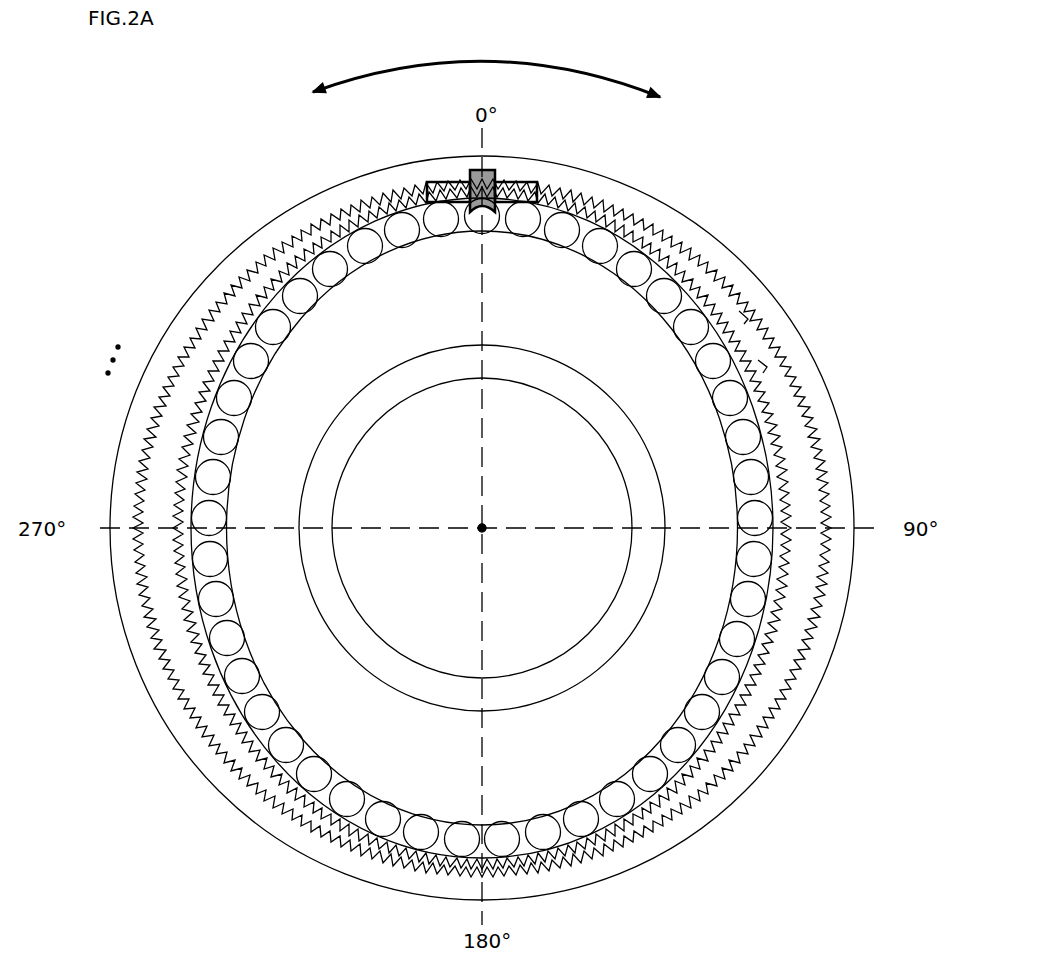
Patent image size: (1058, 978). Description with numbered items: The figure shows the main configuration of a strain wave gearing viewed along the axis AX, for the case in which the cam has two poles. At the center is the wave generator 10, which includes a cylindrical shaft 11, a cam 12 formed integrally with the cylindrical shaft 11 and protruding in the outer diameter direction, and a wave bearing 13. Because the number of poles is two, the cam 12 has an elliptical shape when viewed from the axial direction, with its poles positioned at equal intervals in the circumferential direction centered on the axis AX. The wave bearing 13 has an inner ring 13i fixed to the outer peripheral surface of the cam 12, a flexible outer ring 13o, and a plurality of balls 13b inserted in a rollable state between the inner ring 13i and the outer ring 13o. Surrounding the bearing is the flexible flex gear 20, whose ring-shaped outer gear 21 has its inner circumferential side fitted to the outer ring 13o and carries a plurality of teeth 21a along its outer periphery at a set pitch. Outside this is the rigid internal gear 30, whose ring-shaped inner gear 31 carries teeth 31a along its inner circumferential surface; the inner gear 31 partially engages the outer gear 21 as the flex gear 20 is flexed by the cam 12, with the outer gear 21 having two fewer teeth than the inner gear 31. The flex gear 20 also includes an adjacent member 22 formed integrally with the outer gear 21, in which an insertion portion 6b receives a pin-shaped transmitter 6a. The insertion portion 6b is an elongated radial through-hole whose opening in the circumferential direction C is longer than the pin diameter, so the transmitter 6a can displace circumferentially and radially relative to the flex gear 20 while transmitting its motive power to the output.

The circumferential direction C is at (495, 61).
The internal gear 30 is at (733, 249).
The inner gear 31 is at (768, 338).
The teeth 31a is at (745, 318).
The flex gear 20 is at (535, 492).
The outer gear 21 is at (767, 410).
The teeth 21a is at (766, 366).
The adjacent member 22 is at (520, 188).
The wave bearing 13 is at (439, 528).
The outer ring 13o is at (212, 643).
The inner ring 13i is at (215, 668).
The balls 13b is at (296, 300).
The wave generator 10 is at (482, 510).
The cylindrical shaft 11 is at (577, 413).
The cam 12 is at (560, 310).
The transmitter 6a is at (494, 172).
The insertion portion 6b is at (457, 182).
The axis AX is at (482, 531).